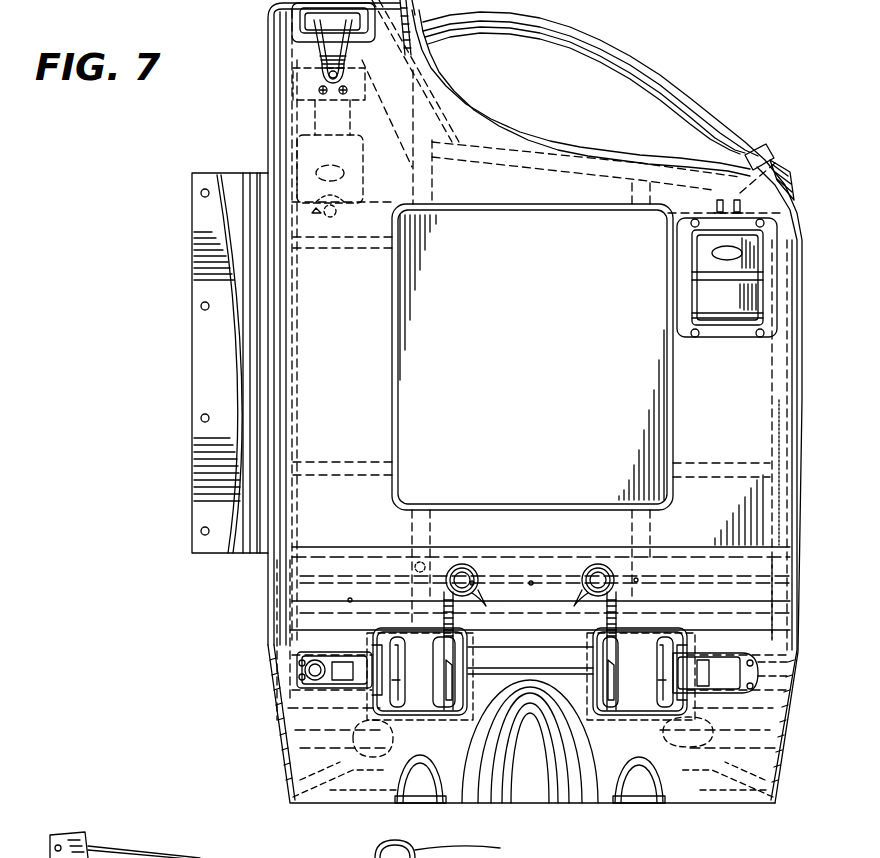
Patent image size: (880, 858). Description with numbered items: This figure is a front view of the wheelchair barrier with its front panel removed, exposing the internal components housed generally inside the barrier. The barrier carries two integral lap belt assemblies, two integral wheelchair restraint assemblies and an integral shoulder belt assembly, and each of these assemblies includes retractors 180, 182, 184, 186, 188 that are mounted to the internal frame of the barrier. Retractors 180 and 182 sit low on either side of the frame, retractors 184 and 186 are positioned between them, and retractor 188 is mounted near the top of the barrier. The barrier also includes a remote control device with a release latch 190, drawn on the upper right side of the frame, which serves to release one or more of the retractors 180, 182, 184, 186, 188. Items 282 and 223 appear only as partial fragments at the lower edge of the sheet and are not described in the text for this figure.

The retractor 180 is at (378, 743).
The retractor 182 is at (693, 743).
The retractor 184 is at (478, 727).
The retractor 186 is at (600, 745).
The retractor 188 is at (350, 168).
The release latch 190 is at (730, 300).
The bracket 282 is at (195, 851).
The roller 223 is at (415, 849).